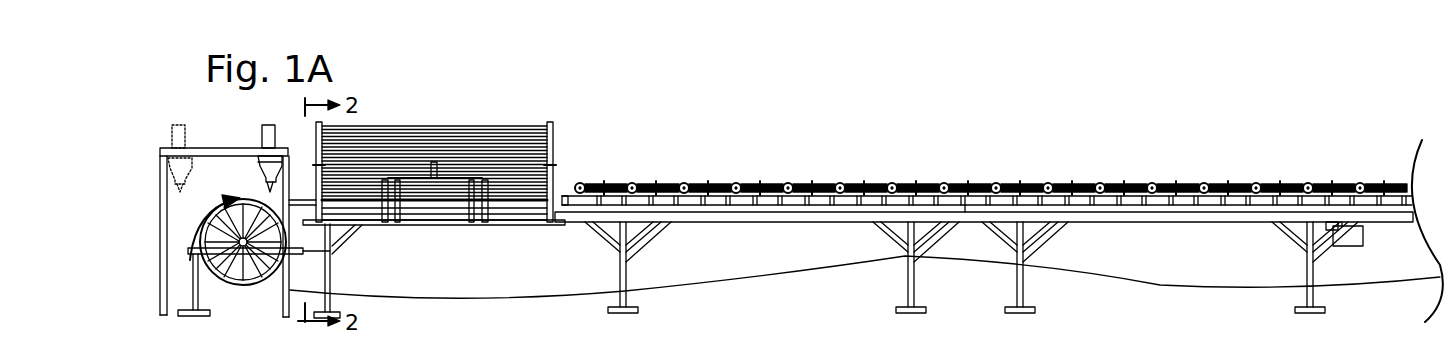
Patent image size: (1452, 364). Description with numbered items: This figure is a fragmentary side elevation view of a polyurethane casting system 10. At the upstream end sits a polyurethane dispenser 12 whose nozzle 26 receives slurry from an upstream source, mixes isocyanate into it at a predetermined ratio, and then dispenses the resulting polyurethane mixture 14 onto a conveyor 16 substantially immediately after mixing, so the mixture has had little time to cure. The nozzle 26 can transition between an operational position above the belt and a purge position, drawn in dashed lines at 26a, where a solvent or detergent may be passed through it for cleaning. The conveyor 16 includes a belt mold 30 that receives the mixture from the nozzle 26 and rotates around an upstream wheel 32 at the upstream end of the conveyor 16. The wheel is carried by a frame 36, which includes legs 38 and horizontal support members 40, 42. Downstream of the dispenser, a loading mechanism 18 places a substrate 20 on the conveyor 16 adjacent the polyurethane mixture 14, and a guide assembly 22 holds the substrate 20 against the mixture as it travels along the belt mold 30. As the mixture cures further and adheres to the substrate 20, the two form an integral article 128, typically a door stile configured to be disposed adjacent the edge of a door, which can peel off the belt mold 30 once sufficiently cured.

The polyurethane casting system 10 is at (1070, 116).
The polyurethane dispenser 12 is at (172, 95).
The polyurethane mixture 14 is at (268, 190).
The conveyor 16 is at (482, 310).
The loading mechanism 18 is at (580, 148).
The substrate 20 is at (544, 125).
The guide assembly 22 is at (900, 160).
The nozzle 26 is at (268, 185).
The purge position 26a is at (176, 124).
The belt mold 30 is at (302, 195).
The upstream wheel 32 is at (245, 290).
The frame 36 is at (355, 255).
The legs 38 is at (198, 292).
The horizontal support member 40 is at (292, 254).
The horizontal support member 42 is at (510, 226).
The integral article 128 is at (160, 240).